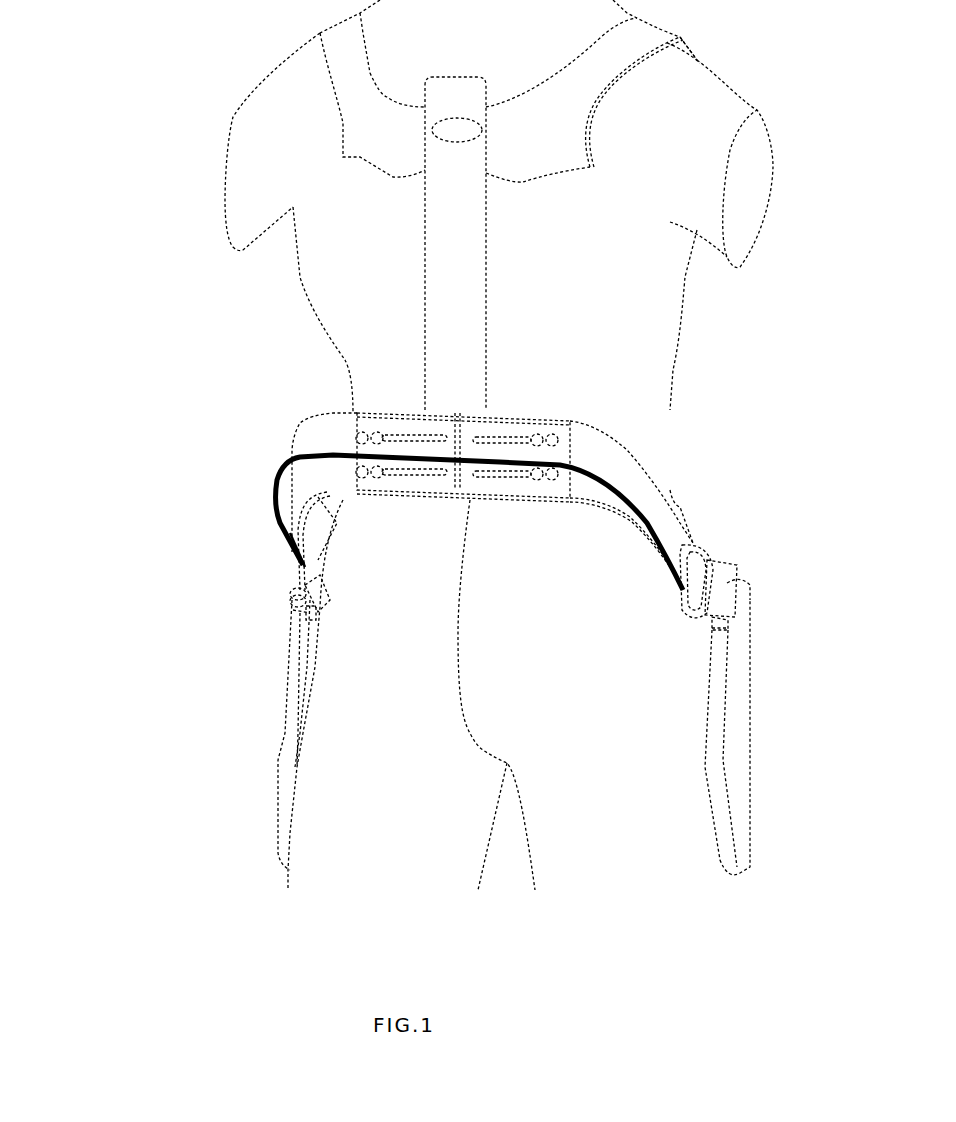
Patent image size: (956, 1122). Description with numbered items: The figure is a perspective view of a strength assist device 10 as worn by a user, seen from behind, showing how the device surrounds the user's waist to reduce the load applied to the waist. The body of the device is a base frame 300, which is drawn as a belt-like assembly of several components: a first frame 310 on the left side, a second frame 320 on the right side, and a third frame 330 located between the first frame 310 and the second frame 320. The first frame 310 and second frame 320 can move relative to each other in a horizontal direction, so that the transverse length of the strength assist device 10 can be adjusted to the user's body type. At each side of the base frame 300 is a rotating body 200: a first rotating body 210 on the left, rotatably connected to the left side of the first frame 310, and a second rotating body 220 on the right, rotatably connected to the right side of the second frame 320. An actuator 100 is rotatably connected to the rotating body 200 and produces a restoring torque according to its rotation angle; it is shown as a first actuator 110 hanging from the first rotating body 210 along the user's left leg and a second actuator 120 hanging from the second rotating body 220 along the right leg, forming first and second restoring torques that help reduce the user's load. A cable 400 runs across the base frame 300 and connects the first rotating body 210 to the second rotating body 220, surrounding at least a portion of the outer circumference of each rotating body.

The strength assist device 10 is at (288, 311).
The actuator 100 is at (437, 737).
The first actuator 110 is at (293, 710).
The second actuator 120 is at (750, 740).
The rotating body 200 is at (417, 650).
The first rotating body 210 is at (290, 597).
The second rotating body 220 is at (705, 550).
The base frame 300 is at (402, 456).
The first frame 310 is at (310, 441).
The second frame 320 is at (670, 510).
The third frame 330 is at (483, 288).
The cable 400 is at (617, 490).